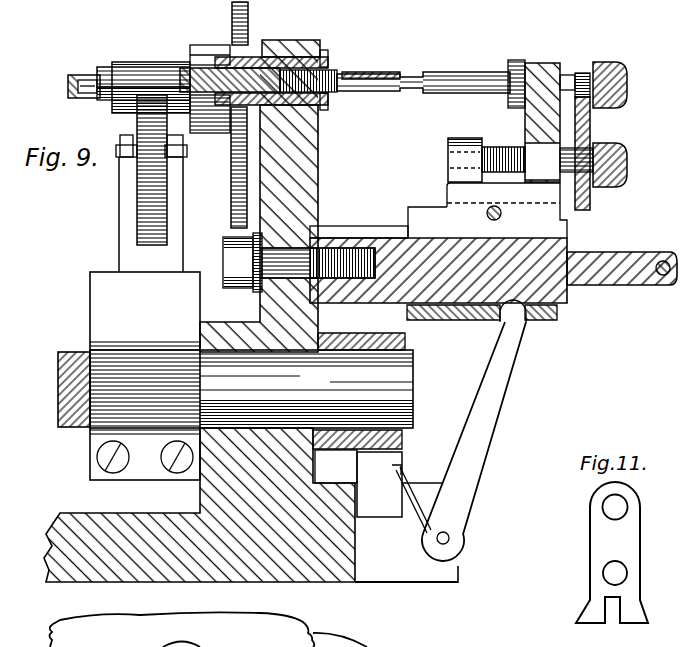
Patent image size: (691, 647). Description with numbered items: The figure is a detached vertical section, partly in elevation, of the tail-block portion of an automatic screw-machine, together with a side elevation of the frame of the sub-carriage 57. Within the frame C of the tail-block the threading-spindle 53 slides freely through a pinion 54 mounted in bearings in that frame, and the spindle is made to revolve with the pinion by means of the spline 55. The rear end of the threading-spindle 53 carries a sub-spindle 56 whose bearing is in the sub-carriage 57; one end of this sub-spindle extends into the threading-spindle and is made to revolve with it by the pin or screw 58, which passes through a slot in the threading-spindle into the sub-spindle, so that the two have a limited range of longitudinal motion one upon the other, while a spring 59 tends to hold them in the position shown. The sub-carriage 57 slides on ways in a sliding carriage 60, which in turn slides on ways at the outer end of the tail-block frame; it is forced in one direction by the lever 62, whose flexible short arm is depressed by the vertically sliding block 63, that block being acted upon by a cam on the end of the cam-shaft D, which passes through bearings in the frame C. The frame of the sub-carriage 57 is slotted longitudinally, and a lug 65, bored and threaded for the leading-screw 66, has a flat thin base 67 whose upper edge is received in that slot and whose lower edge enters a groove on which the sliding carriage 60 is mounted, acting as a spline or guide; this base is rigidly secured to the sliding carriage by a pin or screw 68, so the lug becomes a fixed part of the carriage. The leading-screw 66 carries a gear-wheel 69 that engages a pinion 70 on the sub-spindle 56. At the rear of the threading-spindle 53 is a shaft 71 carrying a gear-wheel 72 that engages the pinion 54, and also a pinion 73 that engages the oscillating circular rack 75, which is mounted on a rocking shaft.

In FIG. 9, the threading-spindle 53 is at (100, 69).
In FIG. 9, the pinion 54 is at (226, 58).
In FIG. 9, the spline 55 is at (328, 100).
In FIG. 9, the sub-spindle 56 is at (438, 72).
In FIG. 9, the sub-carriage 57 is at (526, 124).
In FIG. 11, the sub-carriage 57 is at (612, 552).
In FIG. 9, the pin or screw 58 is at (370, 72).
In FIG. 9, the spring 59 is at (330, 76).
In FIG. 9, the sliding carriage 60 is at (427, 222).
In FIG. 9, the lever 62 is at (459, 441).
In FIG. 9, the sliding block 63 is at (379, 484).
In FIG. 9, the lug 65 is at (462, 138).
In FIG. 9, the leading-screw 66 is at (512, 156).
In FIG. 9, the flat thin base 67 is at (507, 210).
In FIG. 9, the pin or screw 68 is at (489, 216).
In FIG. 9, the gear-wheel 69 is at (590, 124).
In FIG. 9, the pinion 70 is at (583, 70).
In FIG. 9, the shaft 71 is at (68, 86).
In FIG. 9, the gear-wheel 72 is at (231, 165).
In FIG. 9, the pinion 73 is at (139, 62).
In FIG. 9, the oscillating circular rack 75 is at (137, 228).
In FIG. 9, the frame of the tail-block C is at (158, 498).
In FIG. 9, the cam-shaft D is at (235, 389).